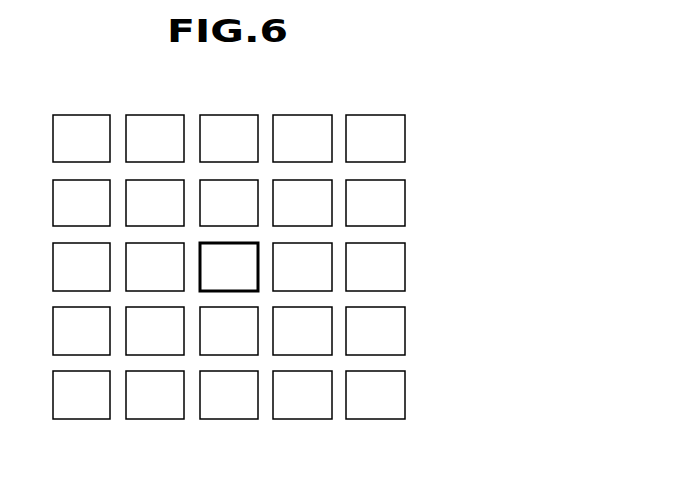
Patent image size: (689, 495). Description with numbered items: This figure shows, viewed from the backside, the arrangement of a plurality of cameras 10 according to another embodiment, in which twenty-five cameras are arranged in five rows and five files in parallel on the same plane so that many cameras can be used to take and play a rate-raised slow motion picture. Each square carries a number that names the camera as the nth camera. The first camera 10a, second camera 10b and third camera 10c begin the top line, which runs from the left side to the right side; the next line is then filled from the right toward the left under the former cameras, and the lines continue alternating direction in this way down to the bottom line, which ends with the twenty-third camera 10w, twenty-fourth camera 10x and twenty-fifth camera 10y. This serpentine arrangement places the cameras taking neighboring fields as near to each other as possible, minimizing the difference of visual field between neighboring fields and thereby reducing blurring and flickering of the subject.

The cameras 10 is at (281, 269).
The first camera 10a is at (82, 115).
The second camera 10b is at (155, 115).
The third camera 10c is at (229, 115).
The twenty-third camera 10w is at (225, 419).
The twenty-fourth camera 10x is at (300, 419).
The twenty-fifth camera 10y is at (373, 419).